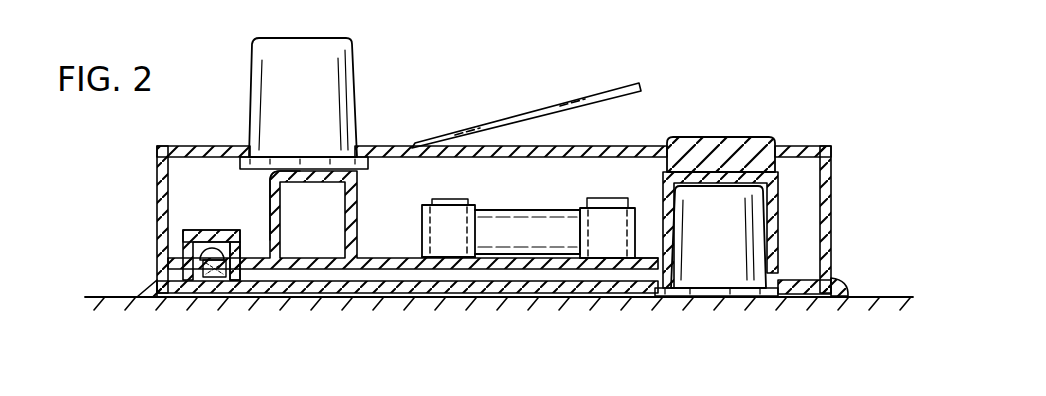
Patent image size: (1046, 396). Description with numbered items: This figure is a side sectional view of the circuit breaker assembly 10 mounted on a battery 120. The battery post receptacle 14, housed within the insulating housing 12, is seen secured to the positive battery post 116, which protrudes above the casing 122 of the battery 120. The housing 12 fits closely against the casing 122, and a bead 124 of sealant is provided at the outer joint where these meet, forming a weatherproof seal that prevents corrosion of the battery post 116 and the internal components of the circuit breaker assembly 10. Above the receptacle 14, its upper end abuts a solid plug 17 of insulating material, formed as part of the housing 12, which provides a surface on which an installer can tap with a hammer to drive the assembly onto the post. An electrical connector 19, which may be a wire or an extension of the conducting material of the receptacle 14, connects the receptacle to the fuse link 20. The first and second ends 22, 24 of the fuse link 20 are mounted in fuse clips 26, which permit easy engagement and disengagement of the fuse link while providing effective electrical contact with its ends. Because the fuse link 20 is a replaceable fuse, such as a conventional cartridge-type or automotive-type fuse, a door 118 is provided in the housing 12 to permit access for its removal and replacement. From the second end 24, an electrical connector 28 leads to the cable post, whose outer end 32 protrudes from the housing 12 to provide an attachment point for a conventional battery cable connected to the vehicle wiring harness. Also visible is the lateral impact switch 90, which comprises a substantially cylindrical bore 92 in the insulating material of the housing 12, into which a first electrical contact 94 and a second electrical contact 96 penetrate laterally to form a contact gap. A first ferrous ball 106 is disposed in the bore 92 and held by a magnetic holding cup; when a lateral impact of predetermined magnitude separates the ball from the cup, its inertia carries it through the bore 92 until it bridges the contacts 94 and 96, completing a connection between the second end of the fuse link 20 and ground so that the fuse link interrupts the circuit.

The circuit breaker assembly 10 is at (513, 173).
The housing 12 is at (810, 147).
The battery post receptacle 14 is at (778, 228).
The plug 17 is at (722, 138).
The electrical connector 19 is at (636, 264).
The fuse link 20 is at (543, 255).
The first end of fuse link 22 is at (583, 210).
The second end of fuse link 24 is at (476, 258).
The fuse clips 26 is at (445, 203).
The electrical connector 28 is at (404, 262).
The outer end of cable post 32 is at (343, 80).
The lateral impact switch 90 is at (190, 225).
The cylindrical bore 92 is at (207, 228).
The first electrical contact 94 is at (235, 272).
The second electrical contact 96 is at (213, 265).
The first ferrous ball 106 is at (221, 272).
The positive battery post 116 is at (732, 274).
The door 118 is at (600, 90).
The battery 120 is at (863, 282).
The casing 122 is at (865, 296).
The bead of sealant 124 is at (143, 290).